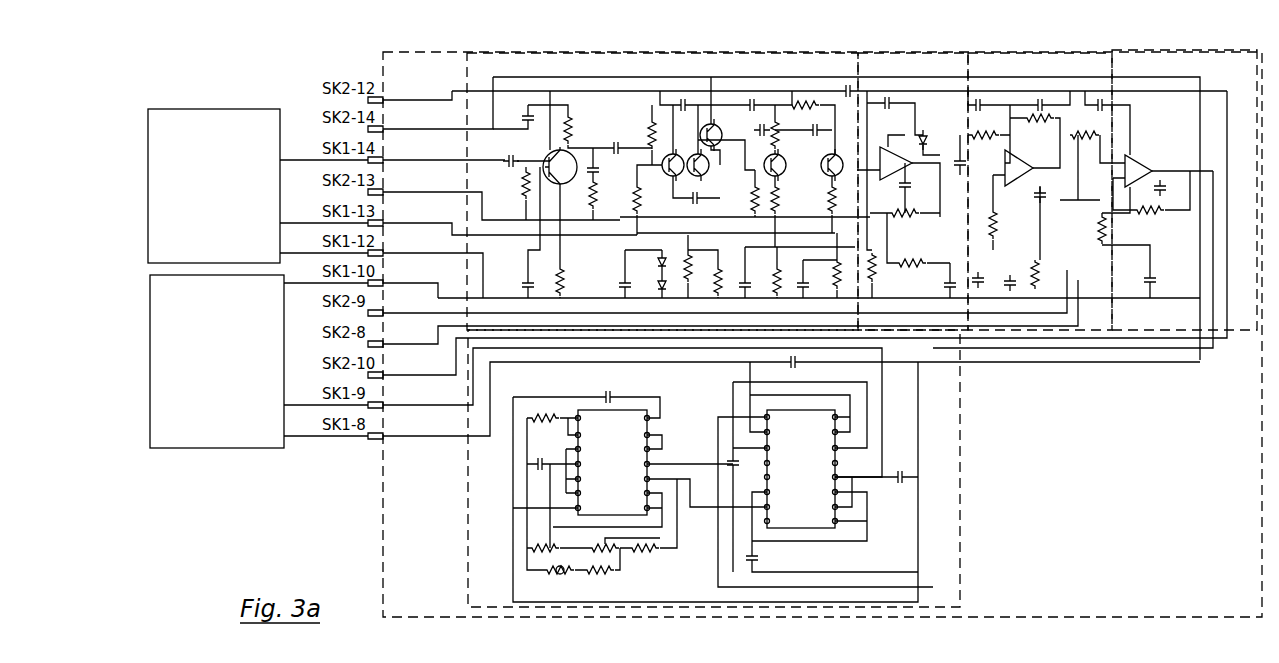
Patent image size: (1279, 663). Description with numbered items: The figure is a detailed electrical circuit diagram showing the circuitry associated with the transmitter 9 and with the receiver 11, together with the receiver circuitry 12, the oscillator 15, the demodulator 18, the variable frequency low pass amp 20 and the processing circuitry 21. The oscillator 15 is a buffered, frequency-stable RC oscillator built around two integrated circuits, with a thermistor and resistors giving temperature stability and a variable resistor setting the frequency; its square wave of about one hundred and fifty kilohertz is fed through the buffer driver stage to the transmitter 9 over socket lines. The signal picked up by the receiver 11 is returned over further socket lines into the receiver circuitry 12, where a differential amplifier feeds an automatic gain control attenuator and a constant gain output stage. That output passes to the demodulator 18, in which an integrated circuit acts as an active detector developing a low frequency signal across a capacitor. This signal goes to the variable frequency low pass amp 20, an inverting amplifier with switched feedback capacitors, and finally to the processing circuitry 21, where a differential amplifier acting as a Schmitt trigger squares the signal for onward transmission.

The transmitter circuitry 9 is at (163, 378).
The receiver 11 is at (170, 198).
The receiver circuitry 12 is at (487, 74).
The oscillator 15 is at (577, 600).
The demodulator 18 is at (877, 74).
The variable frequency low pass amp 20 is at (1045, 44).
The processing circuitry 21 is at (1232, 81).